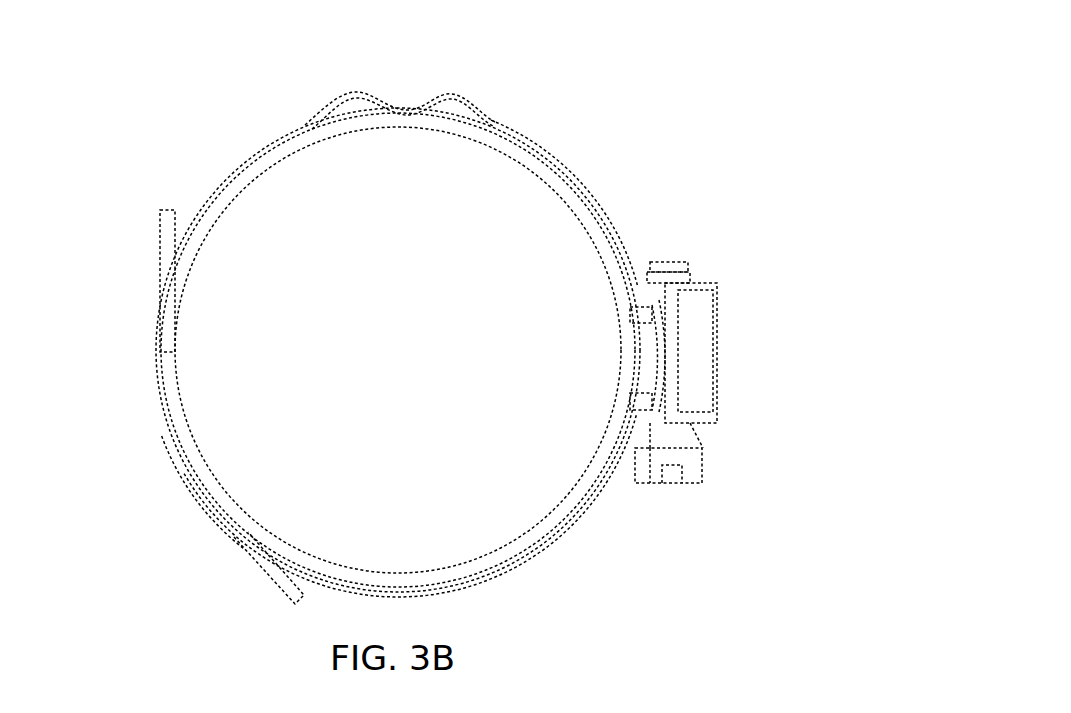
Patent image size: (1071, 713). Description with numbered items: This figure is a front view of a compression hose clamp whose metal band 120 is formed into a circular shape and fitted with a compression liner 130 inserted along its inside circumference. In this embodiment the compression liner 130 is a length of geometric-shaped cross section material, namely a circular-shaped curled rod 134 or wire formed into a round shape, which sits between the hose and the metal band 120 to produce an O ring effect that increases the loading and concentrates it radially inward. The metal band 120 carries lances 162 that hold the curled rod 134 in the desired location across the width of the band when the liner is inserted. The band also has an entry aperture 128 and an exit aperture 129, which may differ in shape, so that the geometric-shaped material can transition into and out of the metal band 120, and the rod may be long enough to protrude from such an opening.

The metal band 120 is at (592, 192).
The entry aperture 128 is at (160, 302).
The exit aperture 129 is at (245, 545).
The compression liner 130 is at (562, 513).
The curled rod 134 is at (498, 557).
The lances 162 is at (547, 163).